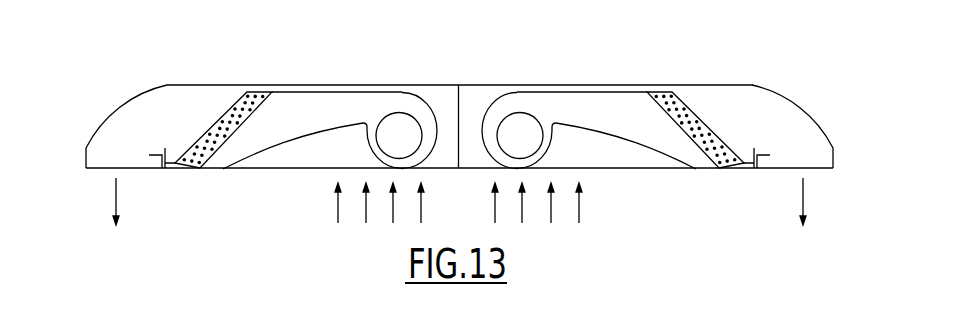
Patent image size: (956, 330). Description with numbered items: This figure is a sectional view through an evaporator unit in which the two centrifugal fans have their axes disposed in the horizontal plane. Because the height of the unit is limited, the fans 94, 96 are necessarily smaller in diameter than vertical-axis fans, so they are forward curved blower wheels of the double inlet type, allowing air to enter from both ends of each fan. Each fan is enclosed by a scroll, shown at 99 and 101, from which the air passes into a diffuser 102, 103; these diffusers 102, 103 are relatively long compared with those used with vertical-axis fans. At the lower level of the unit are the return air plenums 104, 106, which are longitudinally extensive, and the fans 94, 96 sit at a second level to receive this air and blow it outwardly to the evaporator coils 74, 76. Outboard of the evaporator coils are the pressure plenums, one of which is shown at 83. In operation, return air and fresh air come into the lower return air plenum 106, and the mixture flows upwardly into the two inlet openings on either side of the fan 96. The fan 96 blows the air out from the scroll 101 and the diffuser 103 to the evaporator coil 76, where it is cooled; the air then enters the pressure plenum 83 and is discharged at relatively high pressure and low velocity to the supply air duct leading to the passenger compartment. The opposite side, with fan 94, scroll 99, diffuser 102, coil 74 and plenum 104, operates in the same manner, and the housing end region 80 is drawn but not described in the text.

The evaporator coil 74 is at (685, 103).
The evaporator coil 76 is at (237, 100).
The housing end portion (right) 80 is at (782, 125).
The pressure plenum 83 is at (137, 123).
The fan 94 is at (535, 118).
The fan 96 is at (388, 113).
The scroll 99 is at (490, 102).
The scroll 101 is at (425, 102).
The diffuser 102 is at (628, 140).
The diffuser 103 is at (304, 142).
The return air plenum 104 is at (596, 158).
The return air plenum 106 is at (287, 166).